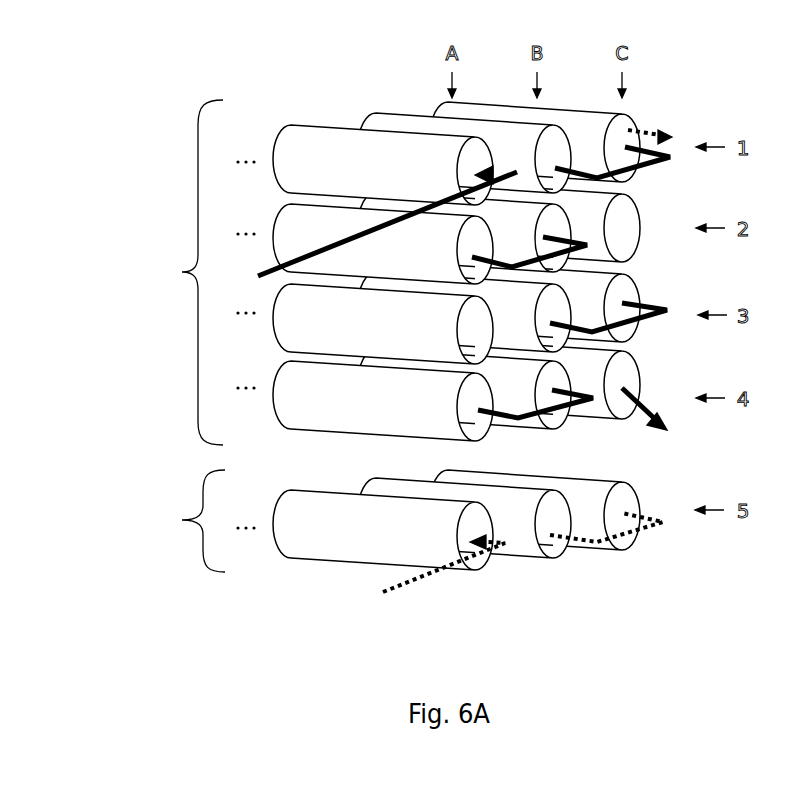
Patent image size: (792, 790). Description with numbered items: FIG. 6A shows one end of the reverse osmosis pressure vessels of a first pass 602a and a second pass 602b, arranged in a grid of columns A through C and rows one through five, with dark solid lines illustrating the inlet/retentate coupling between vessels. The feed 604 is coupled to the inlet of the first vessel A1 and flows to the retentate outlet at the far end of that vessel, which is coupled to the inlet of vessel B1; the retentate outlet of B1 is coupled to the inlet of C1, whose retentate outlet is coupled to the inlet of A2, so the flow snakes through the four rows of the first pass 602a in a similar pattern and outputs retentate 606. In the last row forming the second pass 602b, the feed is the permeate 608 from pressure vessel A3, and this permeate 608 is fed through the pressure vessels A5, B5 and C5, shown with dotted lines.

The first pass 602a is at (182, 273).
The second pass 602b is at (182, 519).
The feed 604 is at (244, 286).
The retentate 606 is at (684, 456).
The permeate feed 608 is at (665, 133).